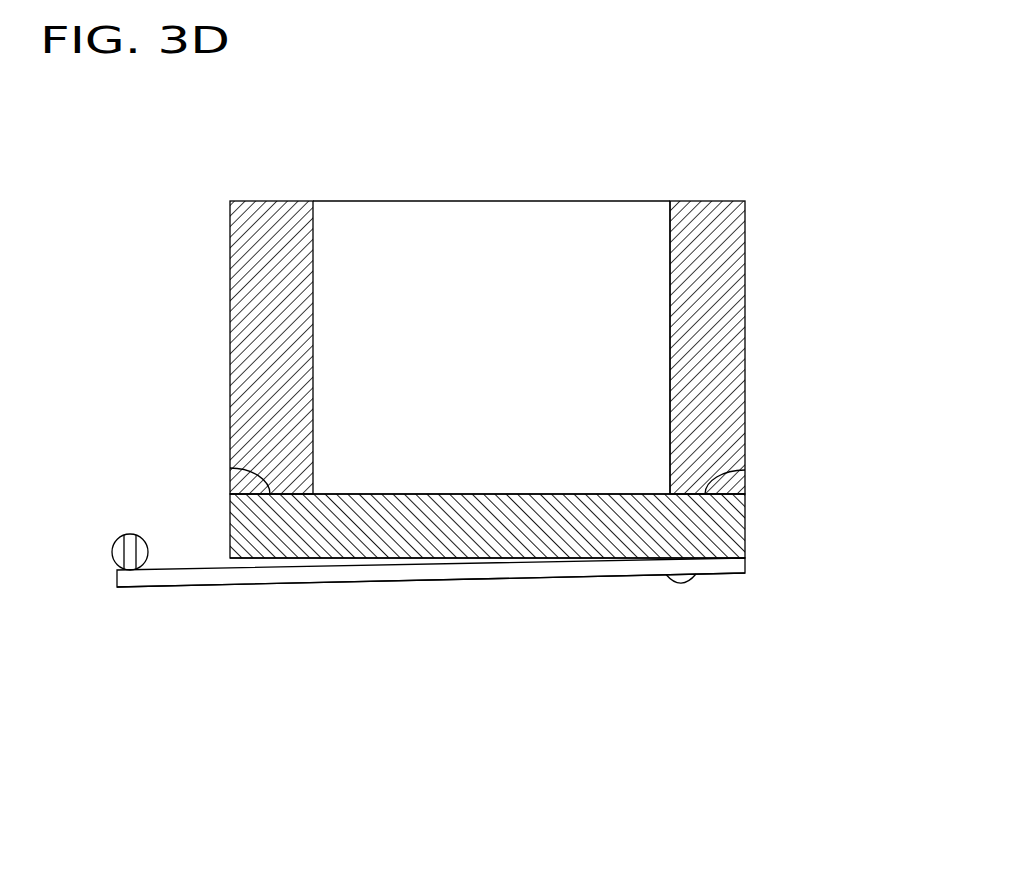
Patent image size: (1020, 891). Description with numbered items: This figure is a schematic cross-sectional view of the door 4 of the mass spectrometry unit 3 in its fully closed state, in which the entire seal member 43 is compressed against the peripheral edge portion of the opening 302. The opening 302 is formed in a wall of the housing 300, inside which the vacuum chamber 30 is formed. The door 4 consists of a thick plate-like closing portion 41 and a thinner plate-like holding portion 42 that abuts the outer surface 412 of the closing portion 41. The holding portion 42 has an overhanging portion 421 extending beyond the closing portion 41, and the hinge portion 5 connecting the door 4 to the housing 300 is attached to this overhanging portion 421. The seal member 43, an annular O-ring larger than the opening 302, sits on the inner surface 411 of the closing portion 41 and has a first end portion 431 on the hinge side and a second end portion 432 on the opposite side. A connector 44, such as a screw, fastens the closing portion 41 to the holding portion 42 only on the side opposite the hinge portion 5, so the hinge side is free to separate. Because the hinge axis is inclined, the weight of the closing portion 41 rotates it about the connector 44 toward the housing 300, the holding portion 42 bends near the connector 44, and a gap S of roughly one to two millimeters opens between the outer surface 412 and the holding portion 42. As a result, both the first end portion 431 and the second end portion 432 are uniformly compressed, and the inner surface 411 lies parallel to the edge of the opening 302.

The mass spectrometry unit 3 is at (550, 295).
The vacuum chamber 30 is at (503, 278).
The housing 300 is at (746, 292).
The opening 302 is at (672, 359).
The door 4 is at (497, 559).
The closing portion 41 is at (547, 534).
The inner surface 411 is at (502, 494).
The outer surface 412 is at (457, 559).
The holding portion 42 is at (431, 639).
The overhanging portion 421 is at (173, 587).
The seal member 43 is at (497, 478).
The first end portion 431 is at (230, 468).
The second end portion 432 is at (746, 479).
The connector 44 is at (688, 583).
The hinge portion 5 is at (114, 545).
The gap S is at (230, 556).